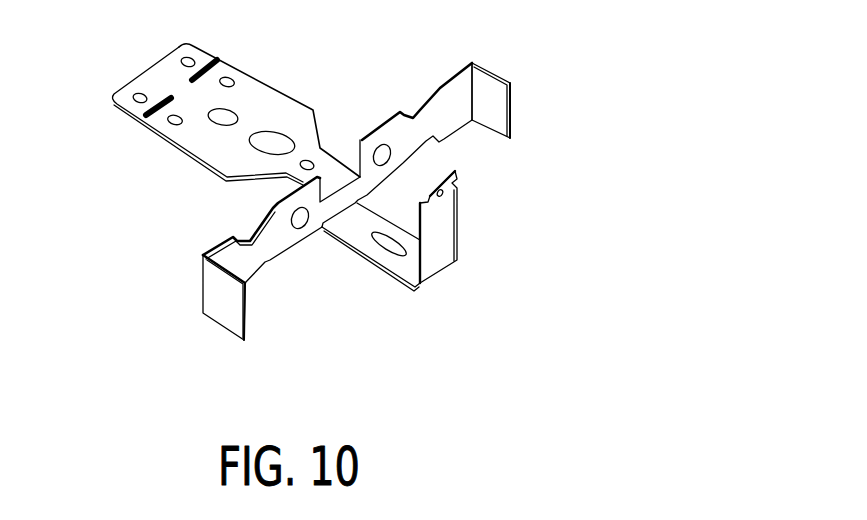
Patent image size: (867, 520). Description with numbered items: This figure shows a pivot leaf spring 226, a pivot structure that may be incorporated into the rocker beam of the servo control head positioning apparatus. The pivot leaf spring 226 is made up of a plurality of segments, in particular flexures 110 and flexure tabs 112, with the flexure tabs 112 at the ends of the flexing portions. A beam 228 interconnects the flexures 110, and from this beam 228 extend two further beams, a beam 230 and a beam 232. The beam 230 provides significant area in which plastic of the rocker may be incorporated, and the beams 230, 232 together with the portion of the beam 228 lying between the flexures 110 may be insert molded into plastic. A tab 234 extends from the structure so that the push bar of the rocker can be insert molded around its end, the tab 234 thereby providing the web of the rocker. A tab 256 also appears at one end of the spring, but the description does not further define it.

The pivot leaf spring 226 is at (177, 210).
The beam 230 is at (272, 95).
The flexures 110 is at (418, 112).
The beam 228 is at (377, 123).
The flexure tabs 112 is at (215, 292).
The tab 256 is at (495, 98).
The beam 232 is at (377, 252).
The tab 234 is at (440, 195).